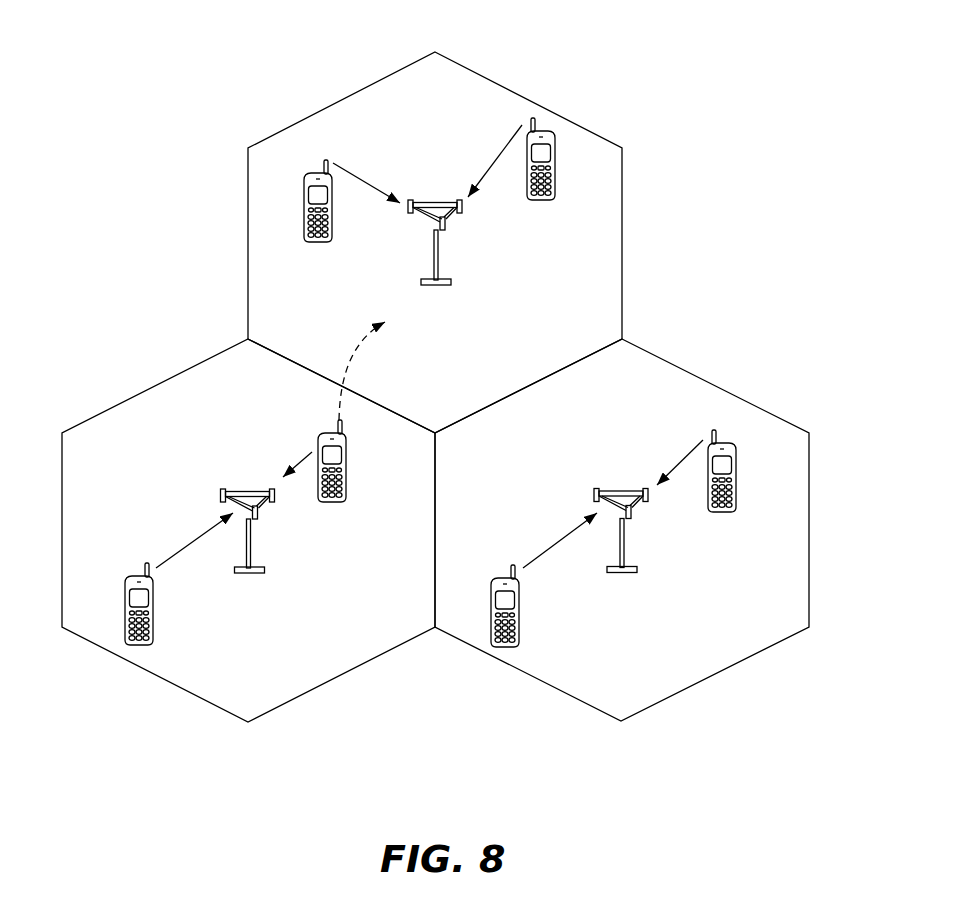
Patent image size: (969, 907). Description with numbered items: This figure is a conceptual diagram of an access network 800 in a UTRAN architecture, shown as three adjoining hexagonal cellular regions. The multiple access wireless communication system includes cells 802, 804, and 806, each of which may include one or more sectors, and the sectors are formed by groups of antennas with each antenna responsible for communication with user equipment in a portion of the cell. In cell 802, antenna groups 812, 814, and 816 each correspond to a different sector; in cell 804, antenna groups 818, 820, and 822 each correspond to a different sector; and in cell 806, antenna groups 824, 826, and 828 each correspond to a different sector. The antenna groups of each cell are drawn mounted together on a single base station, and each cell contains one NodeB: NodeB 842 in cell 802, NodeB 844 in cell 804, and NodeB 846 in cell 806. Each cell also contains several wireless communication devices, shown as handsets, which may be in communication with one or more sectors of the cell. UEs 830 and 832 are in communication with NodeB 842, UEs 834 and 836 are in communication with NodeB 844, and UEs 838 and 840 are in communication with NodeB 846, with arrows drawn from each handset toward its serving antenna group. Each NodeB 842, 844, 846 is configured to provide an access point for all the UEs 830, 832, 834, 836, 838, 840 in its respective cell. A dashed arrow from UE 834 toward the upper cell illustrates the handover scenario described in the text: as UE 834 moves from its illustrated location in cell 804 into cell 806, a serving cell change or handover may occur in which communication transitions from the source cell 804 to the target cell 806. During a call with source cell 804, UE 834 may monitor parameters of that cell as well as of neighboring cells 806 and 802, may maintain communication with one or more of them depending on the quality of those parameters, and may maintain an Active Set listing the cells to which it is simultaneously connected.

The access network 800 is at (758, 52).
The cell 802 is at (712, 385).
The cell 804 is at (132, 395).
The cell 806 is at (512, 90).
The antenna group 812 is at (570, 481).
The antenna group 814 is at (654, 526).
The antenna group 816 is at (670, 506).
The antenna group 818 is at (282, 527).
The antenna group 820 is at (298, 508).
The antenna group 822 is at (197, 483).
The antenna group 824 is at (385, 221).
The antenna group 826 is at (468, 238).
The antenna group 828 is at (485, 219).
The user equipment 830 is at (736, 465).
The user equipment 832 is at (492, 602).
The user equipment 834 is at (345, 455).
The user equipment 836 is at (126, 602).
The user equipment 838 is at (318, 242).
The user equipment 840 is at (548, 201).
The NodeB 842 is at (620, 510).
The NodeB 844 is at (247, 510).
The NodeB 846 is at (435, 223).